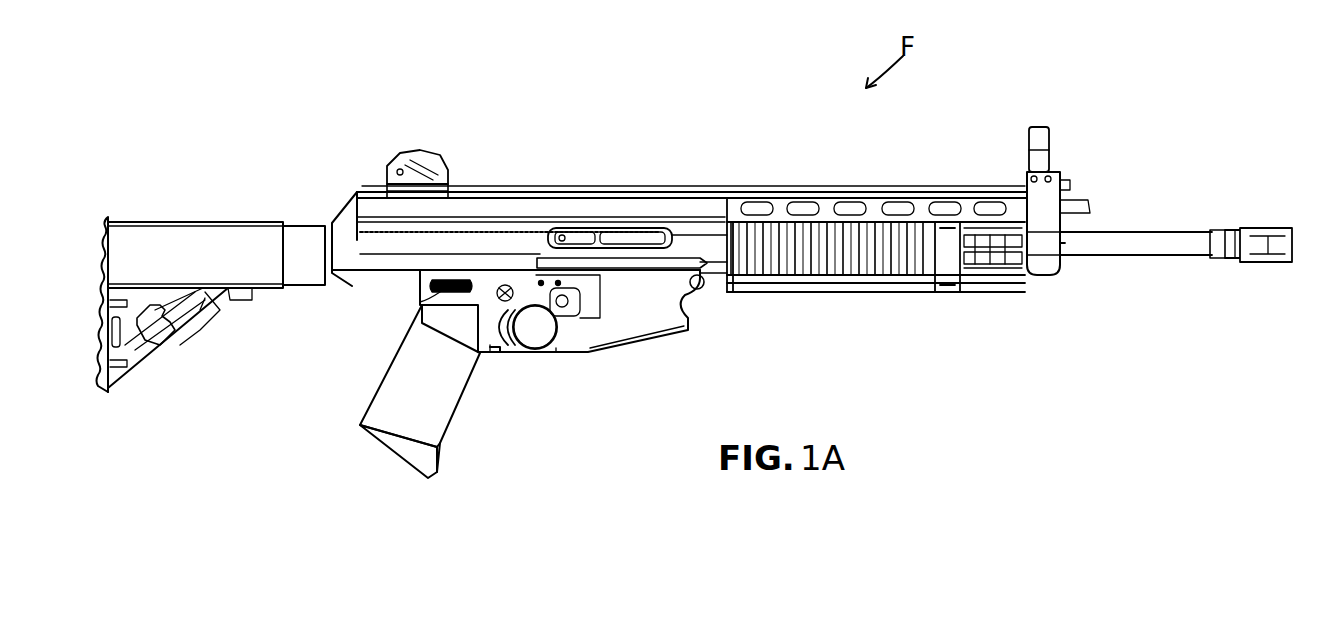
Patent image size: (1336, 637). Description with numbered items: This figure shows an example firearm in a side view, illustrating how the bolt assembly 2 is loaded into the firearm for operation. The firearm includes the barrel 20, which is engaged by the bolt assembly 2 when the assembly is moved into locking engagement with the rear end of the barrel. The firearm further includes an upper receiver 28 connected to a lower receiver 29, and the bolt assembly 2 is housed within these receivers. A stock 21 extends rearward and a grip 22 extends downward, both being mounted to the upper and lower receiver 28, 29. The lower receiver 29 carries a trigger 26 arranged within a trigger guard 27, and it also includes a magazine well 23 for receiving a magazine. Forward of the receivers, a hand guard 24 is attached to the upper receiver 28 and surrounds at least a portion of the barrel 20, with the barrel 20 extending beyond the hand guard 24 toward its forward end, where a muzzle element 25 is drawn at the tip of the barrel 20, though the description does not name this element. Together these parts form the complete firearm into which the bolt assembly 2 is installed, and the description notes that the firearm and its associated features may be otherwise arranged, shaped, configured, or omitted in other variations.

The bolt assembly 2 is at (562, 232).
The firearm barrel 20 is at (1086, 265).
The stock 21 is at (212, 332).
The grip 22 is at (460, 428).
The magazine well 23 is at (655, 354).
The hand guard 24 is at (829, 305).
The muzzle device 25 is at (1266, 218).
The trigger 26 is at (509, 363).
The trigger guard 27 is at (509, 363).
The upper receiver 28 is at (440, 243).
The lower receiver 29 is at (602, 303).